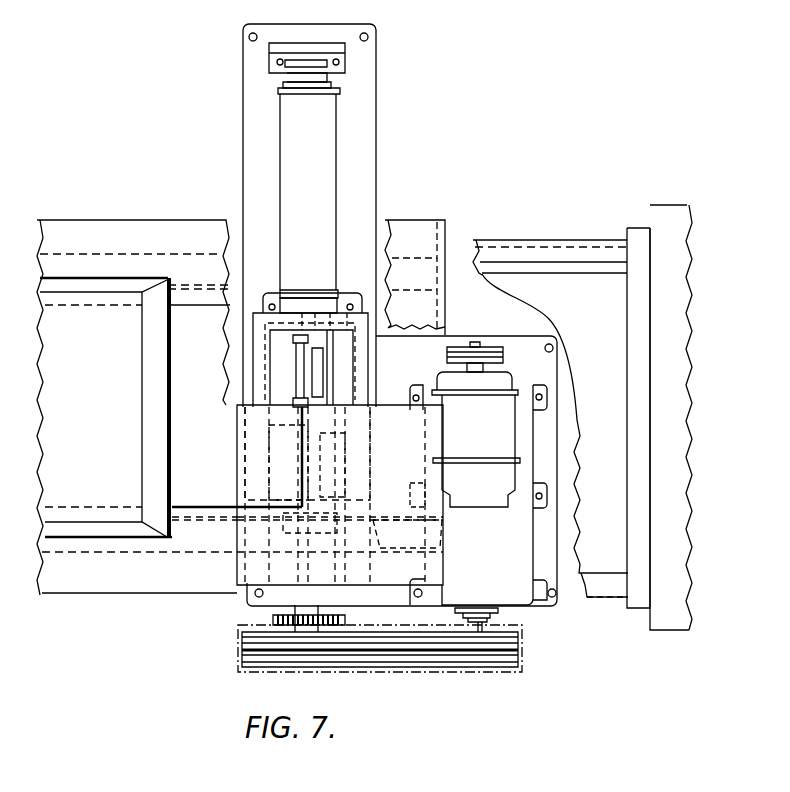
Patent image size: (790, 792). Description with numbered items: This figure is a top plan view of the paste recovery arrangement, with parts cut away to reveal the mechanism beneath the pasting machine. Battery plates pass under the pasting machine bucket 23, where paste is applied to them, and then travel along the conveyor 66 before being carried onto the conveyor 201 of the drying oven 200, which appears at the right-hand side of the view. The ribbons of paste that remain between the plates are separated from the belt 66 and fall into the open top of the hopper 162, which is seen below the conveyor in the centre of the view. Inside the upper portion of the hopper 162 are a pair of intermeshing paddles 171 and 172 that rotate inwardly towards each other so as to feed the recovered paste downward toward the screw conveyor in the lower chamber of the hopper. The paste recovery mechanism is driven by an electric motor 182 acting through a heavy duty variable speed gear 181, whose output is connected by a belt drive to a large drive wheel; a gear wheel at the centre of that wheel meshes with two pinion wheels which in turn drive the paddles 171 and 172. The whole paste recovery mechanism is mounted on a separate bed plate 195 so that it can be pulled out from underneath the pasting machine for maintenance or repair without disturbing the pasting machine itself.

The bed plate 195 is at (377, 95).
The conveyor 66 is at (202, 306).
The conveyor 201 is at (553, 262).
The paddle 171 is at (328, 372).
The hopper 162 is at (371, 402).
The electric motor 182 is at (503, 440).
The paddle 172 is at (268, 433).
The heavy duty variable speed gear 181 is at (537, 550).
The pasting machine bucket 23 is at (110, 540).
The drying oven 200 is at (672, 631).